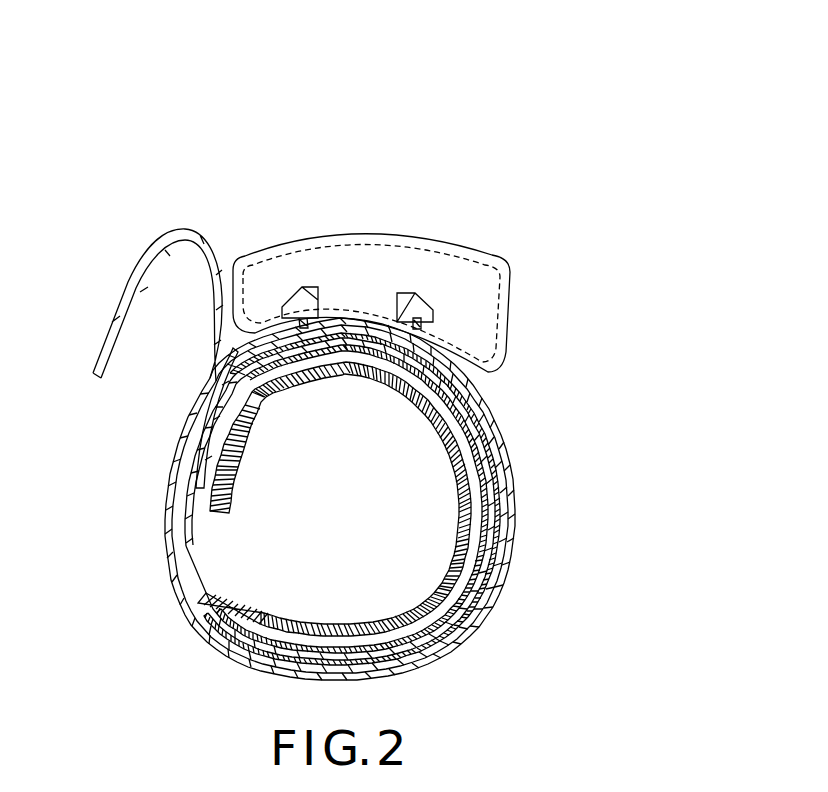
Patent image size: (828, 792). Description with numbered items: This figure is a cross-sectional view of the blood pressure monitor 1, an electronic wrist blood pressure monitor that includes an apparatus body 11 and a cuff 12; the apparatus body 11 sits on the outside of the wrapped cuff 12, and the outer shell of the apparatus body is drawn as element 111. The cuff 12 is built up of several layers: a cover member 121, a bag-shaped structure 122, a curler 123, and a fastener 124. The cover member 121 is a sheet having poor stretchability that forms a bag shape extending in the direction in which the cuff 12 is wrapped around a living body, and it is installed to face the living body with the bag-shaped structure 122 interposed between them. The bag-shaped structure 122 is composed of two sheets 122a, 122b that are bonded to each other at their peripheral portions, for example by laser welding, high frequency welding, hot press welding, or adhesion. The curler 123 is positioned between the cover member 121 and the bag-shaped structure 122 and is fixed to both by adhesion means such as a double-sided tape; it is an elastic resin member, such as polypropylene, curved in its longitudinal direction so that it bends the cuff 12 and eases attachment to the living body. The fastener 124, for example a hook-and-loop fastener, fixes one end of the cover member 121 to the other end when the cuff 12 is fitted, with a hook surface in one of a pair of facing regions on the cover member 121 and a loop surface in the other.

The blood pressure monitor 1 is at (613, 233).
The apparatus body 11 is at (382, 258).
The exterior case 111 is at (505, 262).
The cuff 12 is at (510, 421).
The cover member 121 is at (168, 594).
The bag-shaped structure 122 is at (612, 548).
The sheet 122a is at (467, 565).
The sheet 122b is at (495, 598).
The curler 123 is at (500, 482).
The fastener 124 is at (170, 495).